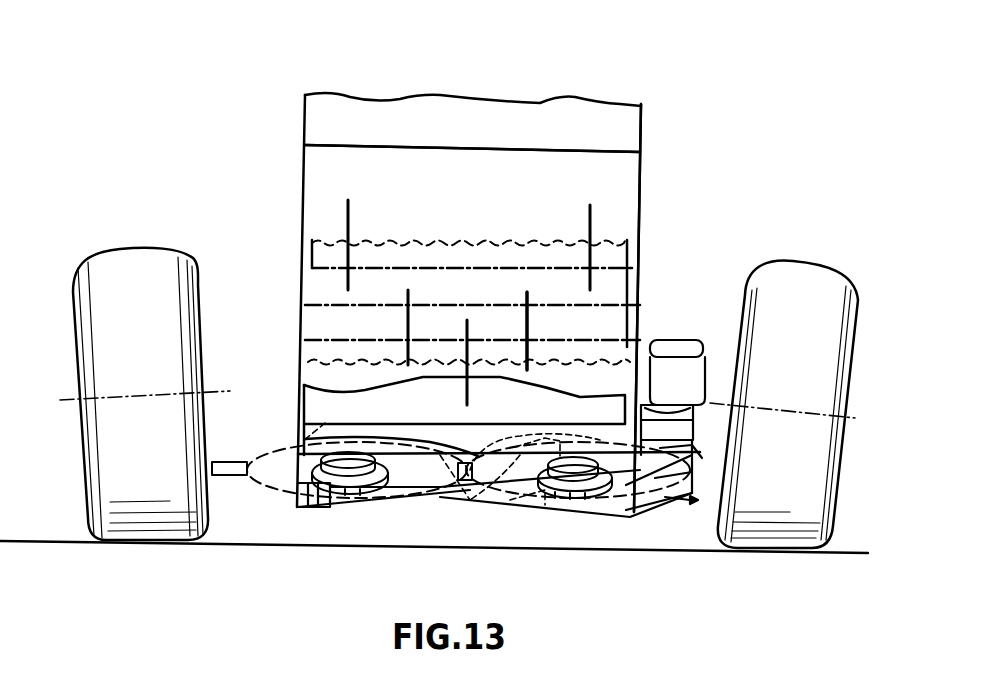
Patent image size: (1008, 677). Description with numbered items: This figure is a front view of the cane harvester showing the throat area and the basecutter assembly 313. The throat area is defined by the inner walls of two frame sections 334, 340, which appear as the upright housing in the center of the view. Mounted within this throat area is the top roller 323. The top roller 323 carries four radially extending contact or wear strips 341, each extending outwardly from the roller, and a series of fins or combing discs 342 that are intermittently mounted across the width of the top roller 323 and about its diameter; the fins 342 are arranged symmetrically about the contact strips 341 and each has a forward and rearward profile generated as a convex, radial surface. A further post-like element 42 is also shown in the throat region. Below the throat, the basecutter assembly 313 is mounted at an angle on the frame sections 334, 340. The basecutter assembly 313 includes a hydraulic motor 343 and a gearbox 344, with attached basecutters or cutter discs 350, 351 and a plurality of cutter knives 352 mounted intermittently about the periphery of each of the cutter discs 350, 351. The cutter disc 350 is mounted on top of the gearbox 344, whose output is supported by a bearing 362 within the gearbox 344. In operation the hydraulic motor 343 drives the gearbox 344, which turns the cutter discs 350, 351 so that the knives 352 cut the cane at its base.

The frame section 340 is at (305, 168).
The frame section 334 is at (642, 183).
The contact strips 341 is at (462, 240).
The fins 342 is at (352, 222).
The post 42 is at (530, 342).
The top roller 323 is at (614, 286).
The hydraulic motor 343 is at (660, 340).
The gearbox 344 is at (692, 483).
The basecutter assembly 313 is at (258, 441).
The bearing 362 is at (320, 500).
The cutter disc 350 is at (346, 502).
The cutter disc 351 is at (576, 503).
The cutter knives 352 is at (422, 434).